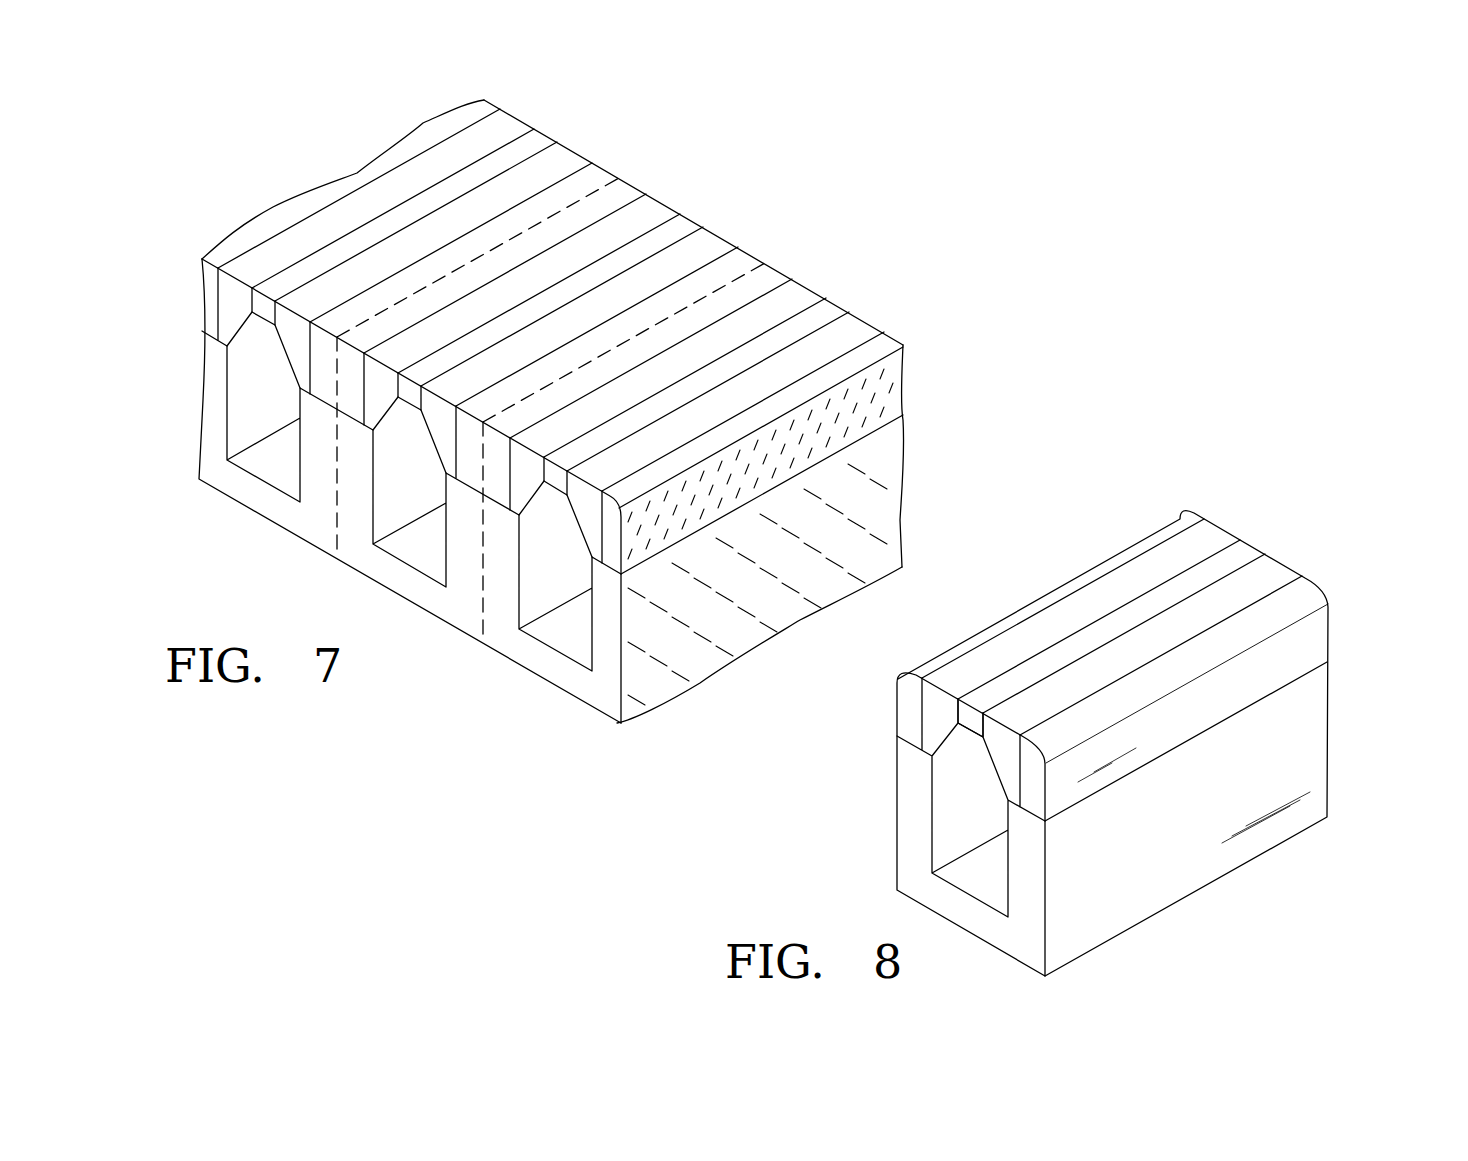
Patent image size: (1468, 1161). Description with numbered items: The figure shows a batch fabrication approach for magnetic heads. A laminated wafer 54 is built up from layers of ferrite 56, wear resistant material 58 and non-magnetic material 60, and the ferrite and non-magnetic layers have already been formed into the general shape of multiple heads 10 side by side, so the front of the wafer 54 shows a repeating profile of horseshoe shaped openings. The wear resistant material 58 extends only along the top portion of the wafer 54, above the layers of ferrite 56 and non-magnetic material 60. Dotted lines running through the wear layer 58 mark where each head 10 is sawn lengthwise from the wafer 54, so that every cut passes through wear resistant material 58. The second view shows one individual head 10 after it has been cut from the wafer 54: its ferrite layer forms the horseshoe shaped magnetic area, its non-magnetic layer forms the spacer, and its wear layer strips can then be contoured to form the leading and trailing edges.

In FIG. 7, the laminated wafer 54 is at (551, 403).
In FIG. 7, the ferrite layer 56 is at (508, 116).
In FIG. 7, the wear resistant material layer 58 is at (660, 167).
In FIG. 7, the non-magnetic material layer 60 is at (537, 134).
In FIG. 8, the head 10 is at (1167, 714).